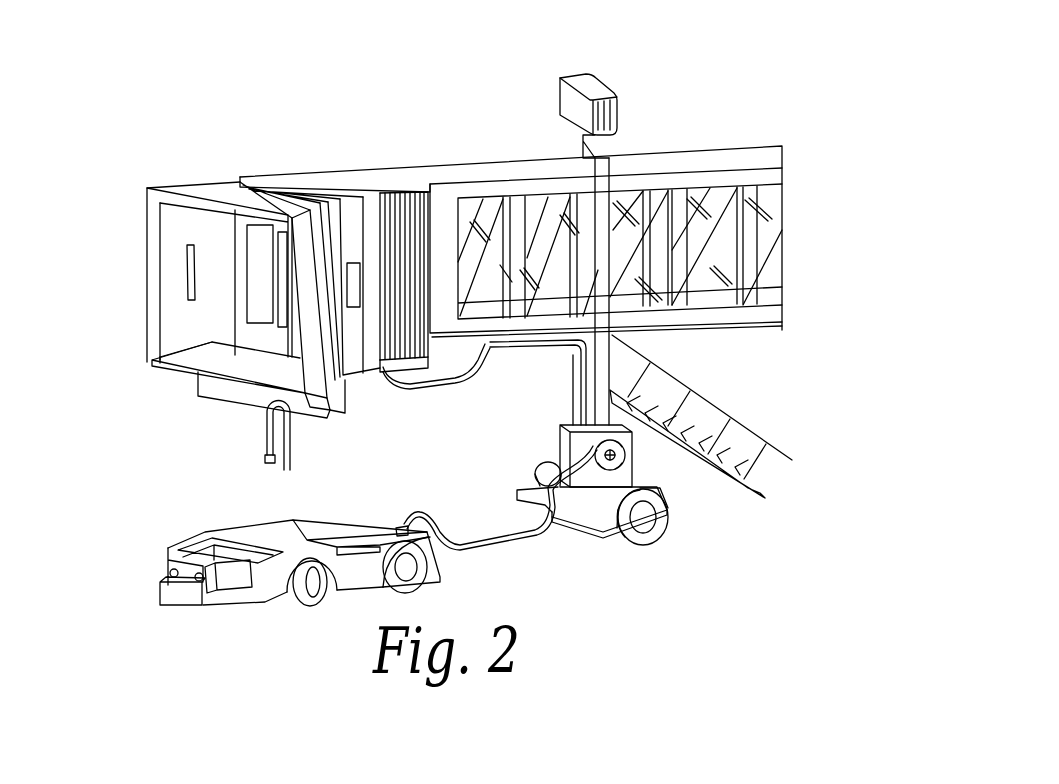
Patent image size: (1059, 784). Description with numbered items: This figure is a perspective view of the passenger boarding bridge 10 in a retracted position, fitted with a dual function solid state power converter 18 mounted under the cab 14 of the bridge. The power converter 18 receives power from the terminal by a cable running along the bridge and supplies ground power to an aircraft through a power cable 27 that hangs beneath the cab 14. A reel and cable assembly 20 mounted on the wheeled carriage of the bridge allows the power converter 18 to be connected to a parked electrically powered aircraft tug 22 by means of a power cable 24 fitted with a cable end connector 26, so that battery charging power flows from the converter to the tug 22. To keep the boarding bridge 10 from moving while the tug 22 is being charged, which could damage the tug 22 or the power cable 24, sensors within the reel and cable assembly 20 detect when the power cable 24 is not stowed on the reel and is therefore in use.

The passenger boarding bridge 10 is at (403, 157).
The cab 14 is at (190, 180).
The dual function solid state power converter 18 is at (210, 384).
The reel and cable assembly 20 is at (577, 448).
The electrically powered aircraft tug 22 is at (278, 535).
The power cable 24 is at (433, 386).
The cable end connector 26 is at (395, 525).
The power cable 27 is at (267, 433).